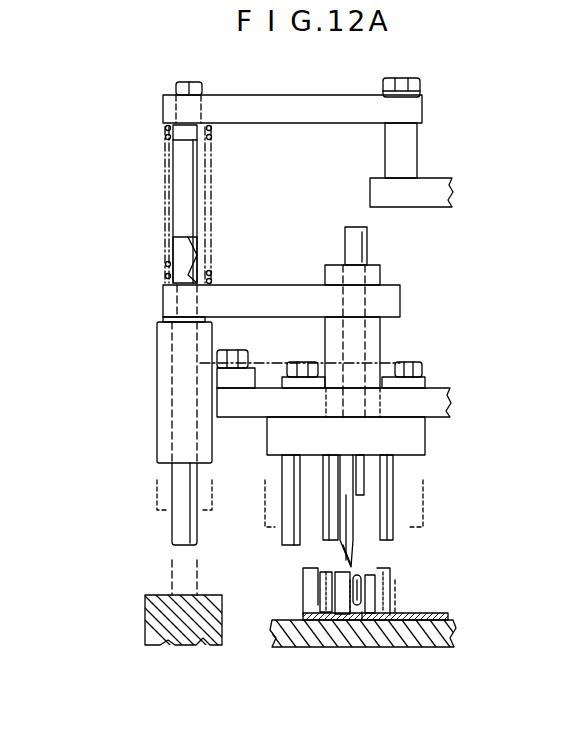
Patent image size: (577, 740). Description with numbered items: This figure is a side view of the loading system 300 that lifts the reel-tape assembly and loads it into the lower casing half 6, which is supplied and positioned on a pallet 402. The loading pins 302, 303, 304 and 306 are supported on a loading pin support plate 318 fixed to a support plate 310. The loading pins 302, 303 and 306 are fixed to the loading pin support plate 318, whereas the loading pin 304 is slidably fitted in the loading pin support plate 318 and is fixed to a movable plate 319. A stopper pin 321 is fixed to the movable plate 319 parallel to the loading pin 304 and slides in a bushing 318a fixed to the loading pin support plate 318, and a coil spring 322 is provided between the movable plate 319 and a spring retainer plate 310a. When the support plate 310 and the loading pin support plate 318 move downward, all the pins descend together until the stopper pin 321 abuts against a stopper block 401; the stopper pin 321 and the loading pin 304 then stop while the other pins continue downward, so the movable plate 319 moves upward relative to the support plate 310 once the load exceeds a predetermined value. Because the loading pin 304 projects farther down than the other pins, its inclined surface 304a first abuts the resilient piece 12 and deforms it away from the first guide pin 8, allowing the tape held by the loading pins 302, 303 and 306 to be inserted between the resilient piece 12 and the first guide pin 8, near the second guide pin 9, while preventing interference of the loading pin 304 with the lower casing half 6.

The loading system 300 is at (474, 242).
The support plate 310 is at (440, 185).
The spring retainer plate 310a is at (300, 102).
The loading pin support plate 318 is at (435, 392).
The bushing 318a is at (160, 378).
The movable plate 319 is at (400, 298).
The stopper pin 321 is at (178, 480).
The coil spring 322 is at (160, 215).
The loading pin 302 is at (283, 533).
The loading pin 303 is at (325, 533).
The loading pin 304 is at (355, 540).
The inclined surface 304a is at (352, 562).
The loading pin 306 is at (395, 536).
The second guide pin 9 is at (305, 598).
The first guide pin 8 is at (385, 588).
The lower casing half 6 is at (442, 618).
The resilient piece 12 is at (362, 620).
The stopper block 401 is at (155, 628).
The pallet 402 is at (283, 637).